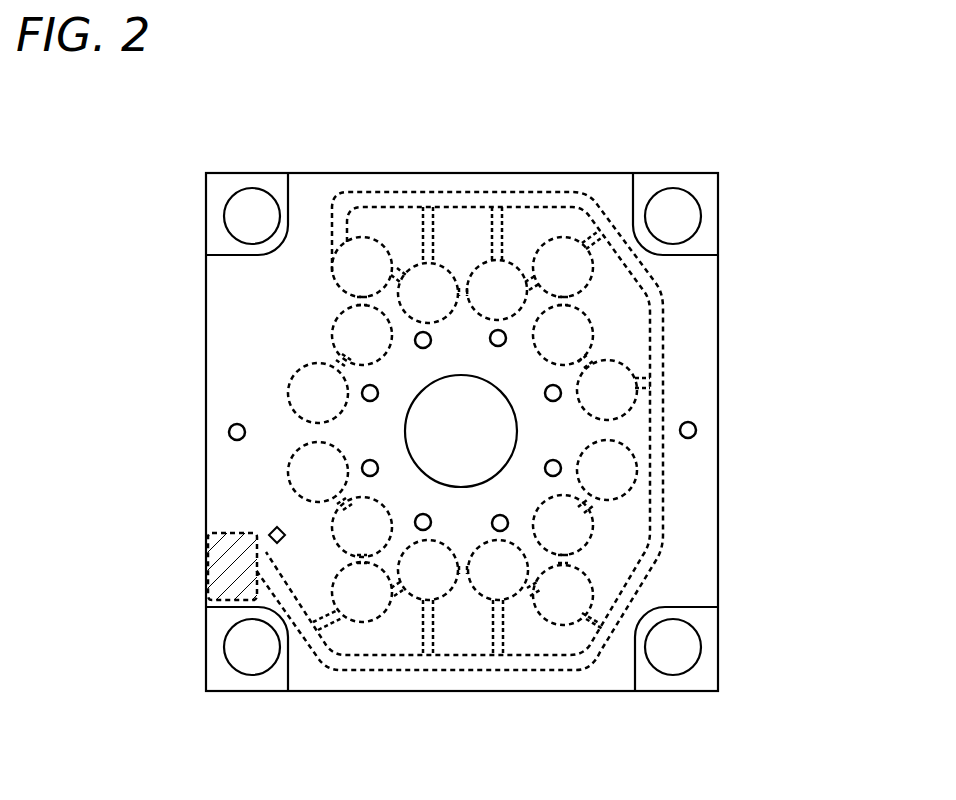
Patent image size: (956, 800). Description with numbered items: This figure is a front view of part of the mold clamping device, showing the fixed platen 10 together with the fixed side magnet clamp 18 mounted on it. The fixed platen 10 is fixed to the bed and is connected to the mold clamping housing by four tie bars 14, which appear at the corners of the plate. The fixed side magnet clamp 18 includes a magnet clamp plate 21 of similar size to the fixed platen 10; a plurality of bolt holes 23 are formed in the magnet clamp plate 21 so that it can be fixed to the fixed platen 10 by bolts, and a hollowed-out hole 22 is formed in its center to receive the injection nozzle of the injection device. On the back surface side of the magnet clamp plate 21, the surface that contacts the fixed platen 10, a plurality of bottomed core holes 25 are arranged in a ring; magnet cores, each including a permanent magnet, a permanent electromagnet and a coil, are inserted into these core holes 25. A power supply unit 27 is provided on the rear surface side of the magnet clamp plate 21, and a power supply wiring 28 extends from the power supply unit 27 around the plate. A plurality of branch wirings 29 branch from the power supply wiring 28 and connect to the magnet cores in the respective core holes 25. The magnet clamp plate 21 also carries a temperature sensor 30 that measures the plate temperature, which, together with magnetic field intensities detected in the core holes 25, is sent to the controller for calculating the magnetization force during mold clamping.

The fixed platen 10 is at (717, 173).
The tie bars 14 is at (224, 216).
The fixed side magnet clamp 18 is at (352, 173).
The magnet clamp plate 21 is at (302, 173).
The hollowed-out hole 22 is at (405, 432).
The bolt holes 23 is at (361, 392).
The core holes 25 is at (390, 242).
The power supply unit 27 is at (207, 562).
The power supply wiring 28 is at (664, 306).
The branch wirings 29 is at (500, 227).
The temperature sensor 30 is at (269, 539).